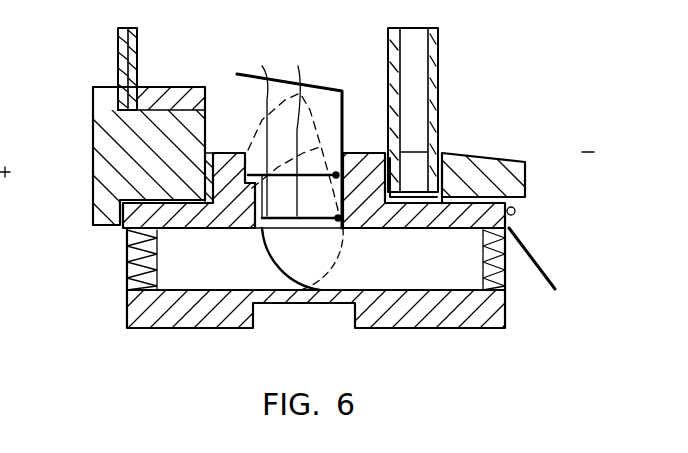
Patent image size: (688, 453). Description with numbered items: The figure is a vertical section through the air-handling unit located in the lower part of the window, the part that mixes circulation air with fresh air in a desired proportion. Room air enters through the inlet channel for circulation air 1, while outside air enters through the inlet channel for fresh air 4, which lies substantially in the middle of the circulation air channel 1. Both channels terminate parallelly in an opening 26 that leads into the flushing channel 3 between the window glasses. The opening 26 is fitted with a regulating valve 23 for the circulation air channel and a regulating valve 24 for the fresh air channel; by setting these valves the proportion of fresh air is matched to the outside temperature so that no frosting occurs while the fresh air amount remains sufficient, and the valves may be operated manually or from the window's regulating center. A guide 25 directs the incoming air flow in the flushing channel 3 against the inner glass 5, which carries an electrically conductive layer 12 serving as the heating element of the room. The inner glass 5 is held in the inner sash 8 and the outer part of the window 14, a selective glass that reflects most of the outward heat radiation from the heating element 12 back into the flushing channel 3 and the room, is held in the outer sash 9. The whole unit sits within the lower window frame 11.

The inlet channel for circulation air 1 is at (222, 270).
The flushing channel 3 is at (201, 67).
The inlet channel for fresh air 4 is at (468, 275).
The inner glass 5 is at (118, 50).
The inner sash 8 is at (107, 168).
The outer sash 9 is at (490, 162).
The window frame 11 is at (146, 318).
The electrically conductive layer 12 is at (118, 70).
The outer part of the window 14 is at (422, 118).
The regulating valve for the circulation air channel 23 is at (287, 132).
The regulating valve for the fresh air channel 24 is at (254, 132).
The guide 25 is at (320, 90).
The opening 26 is at (338, 172).